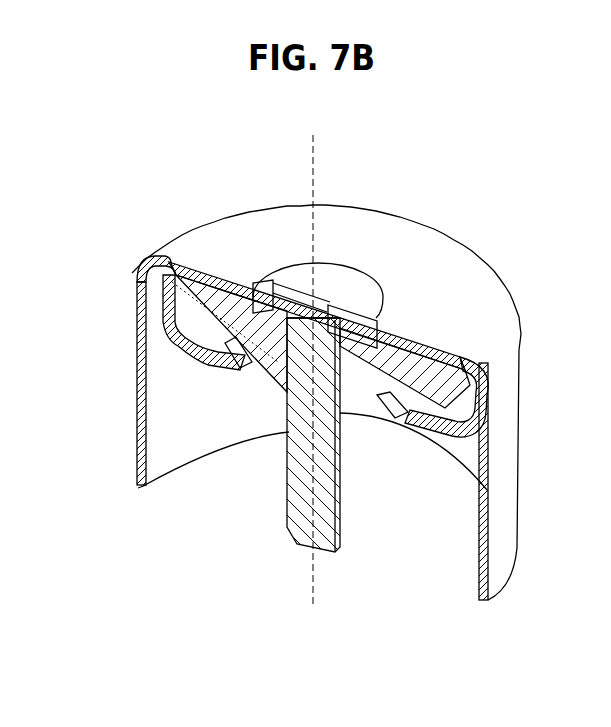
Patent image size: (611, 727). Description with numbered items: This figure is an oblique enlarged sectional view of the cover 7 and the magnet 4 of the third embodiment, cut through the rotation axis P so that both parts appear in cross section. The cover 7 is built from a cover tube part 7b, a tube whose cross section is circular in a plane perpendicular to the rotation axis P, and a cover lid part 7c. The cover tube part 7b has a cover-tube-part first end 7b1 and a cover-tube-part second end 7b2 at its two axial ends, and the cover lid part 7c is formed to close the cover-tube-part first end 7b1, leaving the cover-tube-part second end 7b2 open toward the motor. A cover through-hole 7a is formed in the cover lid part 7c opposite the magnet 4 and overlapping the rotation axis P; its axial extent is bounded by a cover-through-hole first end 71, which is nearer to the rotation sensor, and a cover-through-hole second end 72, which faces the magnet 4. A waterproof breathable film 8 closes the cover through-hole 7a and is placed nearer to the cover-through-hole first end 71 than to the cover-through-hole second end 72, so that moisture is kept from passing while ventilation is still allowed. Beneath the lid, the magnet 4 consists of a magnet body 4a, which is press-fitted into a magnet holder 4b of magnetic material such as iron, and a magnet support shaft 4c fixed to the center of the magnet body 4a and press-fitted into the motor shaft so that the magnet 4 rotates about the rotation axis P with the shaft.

The cover 7 is at (208, 201).
The cover through-hole 7a is at (322, 300).
The cover tube part 7b is at (137, 371).
The cover-tube-part first end 7b1 is at (132, 272).
The cover-tube-part second end 7b2 is at (488, 602).
The cover lid part 7c is at (268, 230).
The cover-through-hole first end 71 is at (300, 278).
The cover-through-hole second end 72 is at (306, 332).
The waterproof breathable film 8 is at (362, 293).
The magnet 4 is at (243, 400).
The magnet body 4a is at (200, 303).
The magnet holder 4b is at (493, 403).
The magnet support shaft 4c is at (300, 533).
The rotation axis P is at (311, 388).